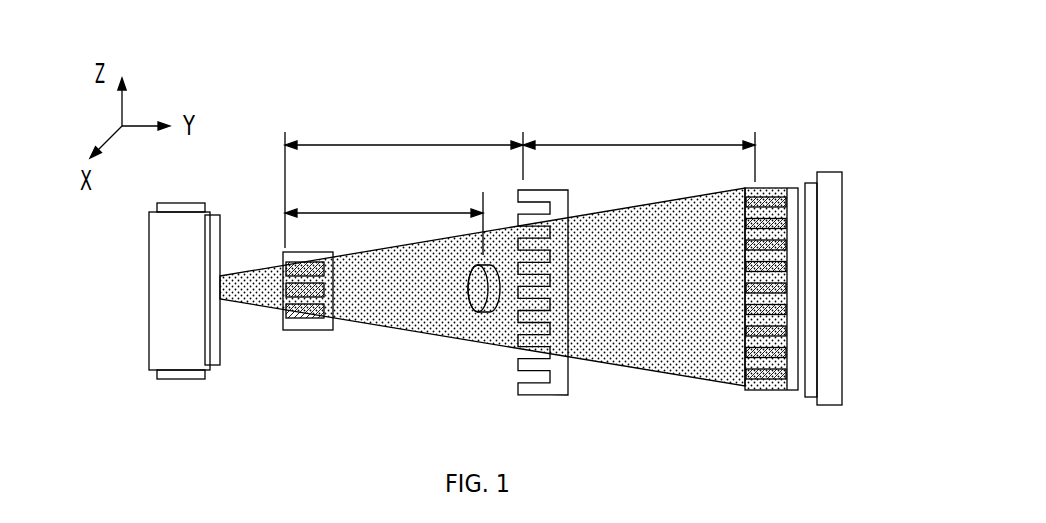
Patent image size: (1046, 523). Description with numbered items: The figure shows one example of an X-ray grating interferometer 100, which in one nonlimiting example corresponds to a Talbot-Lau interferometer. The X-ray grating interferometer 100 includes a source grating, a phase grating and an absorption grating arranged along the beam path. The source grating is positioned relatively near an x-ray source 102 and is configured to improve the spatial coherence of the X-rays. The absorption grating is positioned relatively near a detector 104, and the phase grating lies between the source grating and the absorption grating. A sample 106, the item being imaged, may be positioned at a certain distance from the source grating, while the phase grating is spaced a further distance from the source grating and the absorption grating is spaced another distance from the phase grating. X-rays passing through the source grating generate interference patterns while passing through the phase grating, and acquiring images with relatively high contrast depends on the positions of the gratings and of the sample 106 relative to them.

The X-ray grating interferometer 100 is at (296, 83).
The x-ray source 102 is at (140, 282).
The detector 104 is at (860, 239).
The sample 106 is at (486, 327).